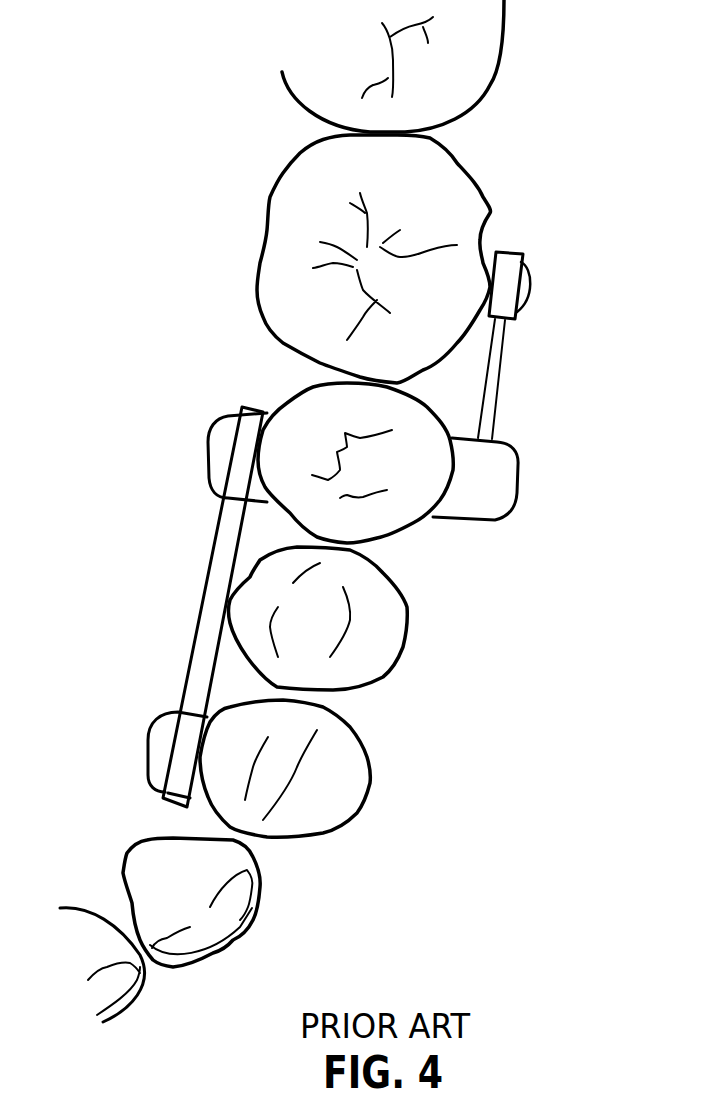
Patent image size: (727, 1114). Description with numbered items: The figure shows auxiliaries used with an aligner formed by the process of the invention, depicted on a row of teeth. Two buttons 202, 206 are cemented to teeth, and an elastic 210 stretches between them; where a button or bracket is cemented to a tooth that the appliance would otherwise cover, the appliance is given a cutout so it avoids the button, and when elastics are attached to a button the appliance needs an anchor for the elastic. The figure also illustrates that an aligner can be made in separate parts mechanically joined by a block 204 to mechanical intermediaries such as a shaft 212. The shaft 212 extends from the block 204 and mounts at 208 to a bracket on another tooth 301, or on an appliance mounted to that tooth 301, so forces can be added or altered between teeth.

The button 202 is at (205, 448).
The block 204 is at (520, 482).
The button 206 is at (147, 745).
The mount 208 is at (528, 300).
The elastic 210 is at (200, 616).
The shaft 212 is at (505, 390).
The tooth 301 is at (488, 213).